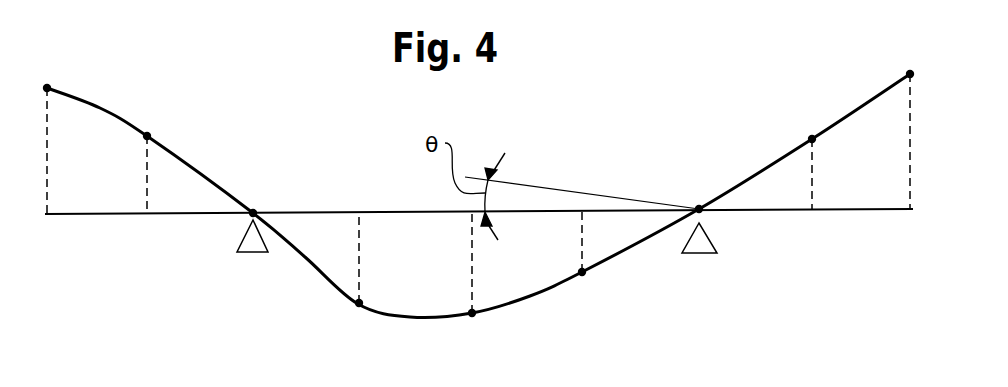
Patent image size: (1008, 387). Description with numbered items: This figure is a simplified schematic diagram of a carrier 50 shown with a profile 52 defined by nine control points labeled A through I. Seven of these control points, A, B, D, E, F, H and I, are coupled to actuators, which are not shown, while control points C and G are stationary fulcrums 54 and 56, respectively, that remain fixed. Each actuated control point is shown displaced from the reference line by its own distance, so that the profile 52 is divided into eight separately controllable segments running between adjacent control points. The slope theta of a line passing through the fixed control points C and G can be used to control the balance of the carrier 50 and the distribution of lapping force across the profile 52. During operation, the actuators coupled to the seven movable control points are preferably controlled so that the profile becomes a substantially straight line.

The carrier 50 is at (684, 119).
The profile 52 is at (100, 108).
The stationary fulcrum 54 is at (245, 252).
The stationary fulcrum 56 is at (698, 253).